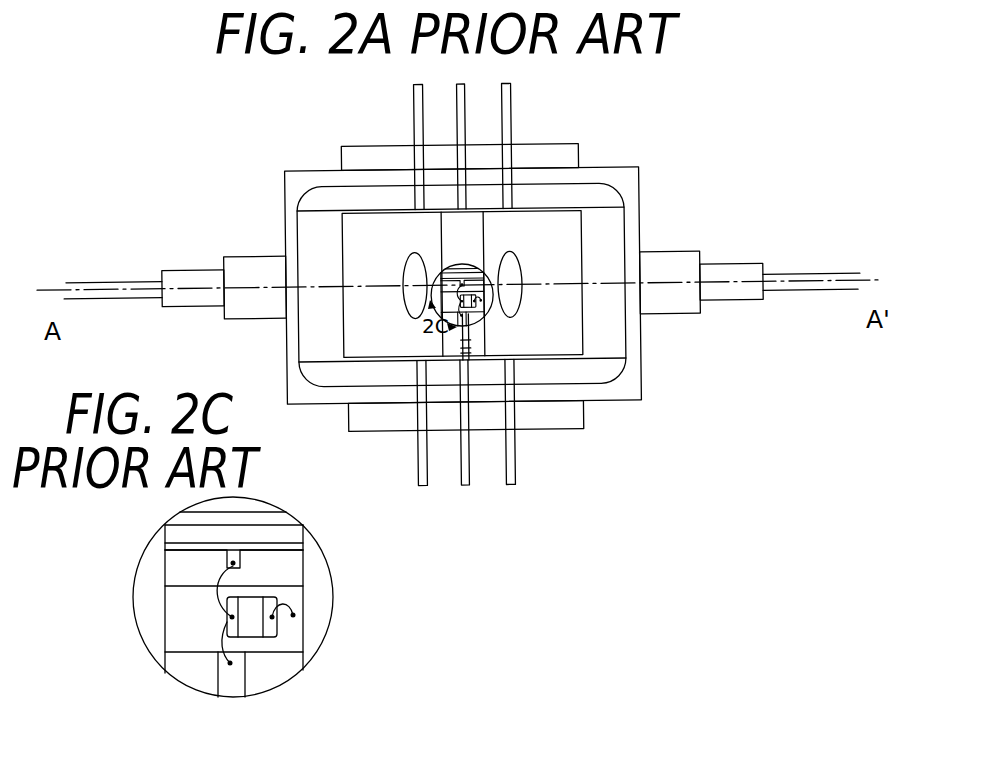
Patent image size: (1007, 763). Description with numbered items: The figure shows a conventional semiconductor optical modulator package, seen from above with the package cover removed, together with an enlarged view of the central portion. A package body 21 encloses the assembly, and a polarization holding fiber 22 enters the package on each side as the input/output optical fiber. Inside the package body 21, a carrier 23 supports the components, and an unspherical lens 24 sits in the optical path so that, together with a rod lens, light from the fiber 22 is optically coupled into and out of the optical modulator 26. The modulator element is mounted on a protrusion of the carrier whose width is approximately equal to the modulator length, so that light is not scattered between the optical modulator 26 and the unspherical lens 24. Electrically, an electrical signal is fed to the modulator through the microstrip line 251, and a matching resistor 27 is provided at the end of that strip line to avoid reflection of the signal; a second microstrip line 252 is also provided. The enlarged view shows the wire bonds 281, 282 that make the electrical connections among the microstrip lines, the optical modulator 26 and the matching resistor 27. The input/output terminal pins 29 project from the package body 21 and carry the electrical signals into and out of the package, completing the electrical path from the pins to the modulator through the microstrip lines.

In FIG. 2A, the package body 21 is at (625, 177).
In FIG. 2A, the polarization holding fiber 22 is at (793, 272).
In FIG. 2A, the carrier 23 is at (548, 232).
In FIG. 2C, the carrier 23 is at (173, 633).
In FIG. 2A, the unspherical lens 24 is at (413, 262).
In FIG. 2C, the optical modulator 26 is at (288, 567).
In FIG. 2C, the matching resistor 27 is at (253, 630).
In FIG. 2A, the input/output terminal pins 29 is at (537, 488).
In FIG. 2C, the microstrip line 251 is at (247, 667).
In FIG. 2A, the microstrip line 252 is at (458, 413).
In FIG. 2C, the wire bond 281 is at (231, 563).
In FIG. 2A, the wire bond 282 is at (467, 358).